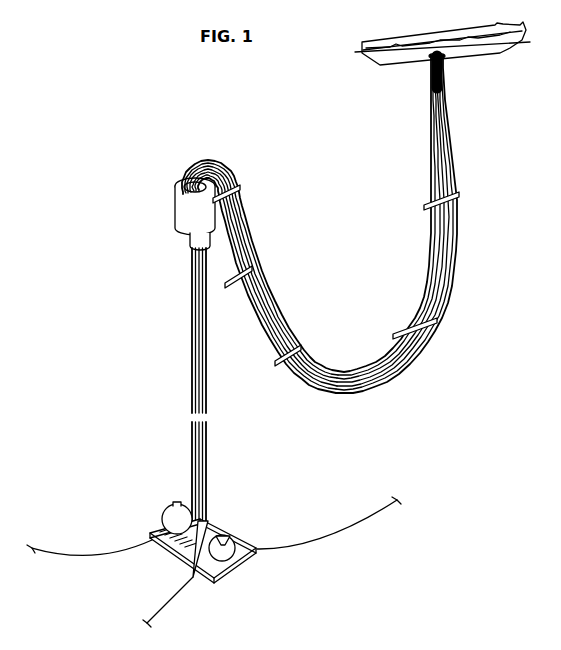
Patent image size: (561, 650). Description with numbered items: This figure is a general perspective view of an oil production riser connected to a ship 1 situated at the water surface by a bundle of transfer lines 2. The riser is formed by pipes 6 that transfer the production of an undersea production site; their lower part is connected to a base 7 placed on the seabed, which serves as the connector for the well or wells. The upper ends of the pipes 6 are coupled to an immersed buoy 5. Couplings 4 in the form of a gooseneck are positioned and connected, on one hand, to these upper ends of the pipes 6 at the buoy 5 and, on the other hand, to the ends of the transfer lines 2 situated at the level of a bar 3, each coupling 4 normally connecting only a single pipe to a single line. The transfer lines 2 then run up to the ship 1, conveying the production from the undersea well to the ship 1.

The ship 1 is at (362, 57).
The transfer lines 2 is at (412, 157).
The bar 3 is at (237, 185).
The couplings 4 is at (215, 170).
The immersed buoy 5 is at (172, 213).
The pipes 6 is at (188, 340).
The base 7 is at (166, 503).